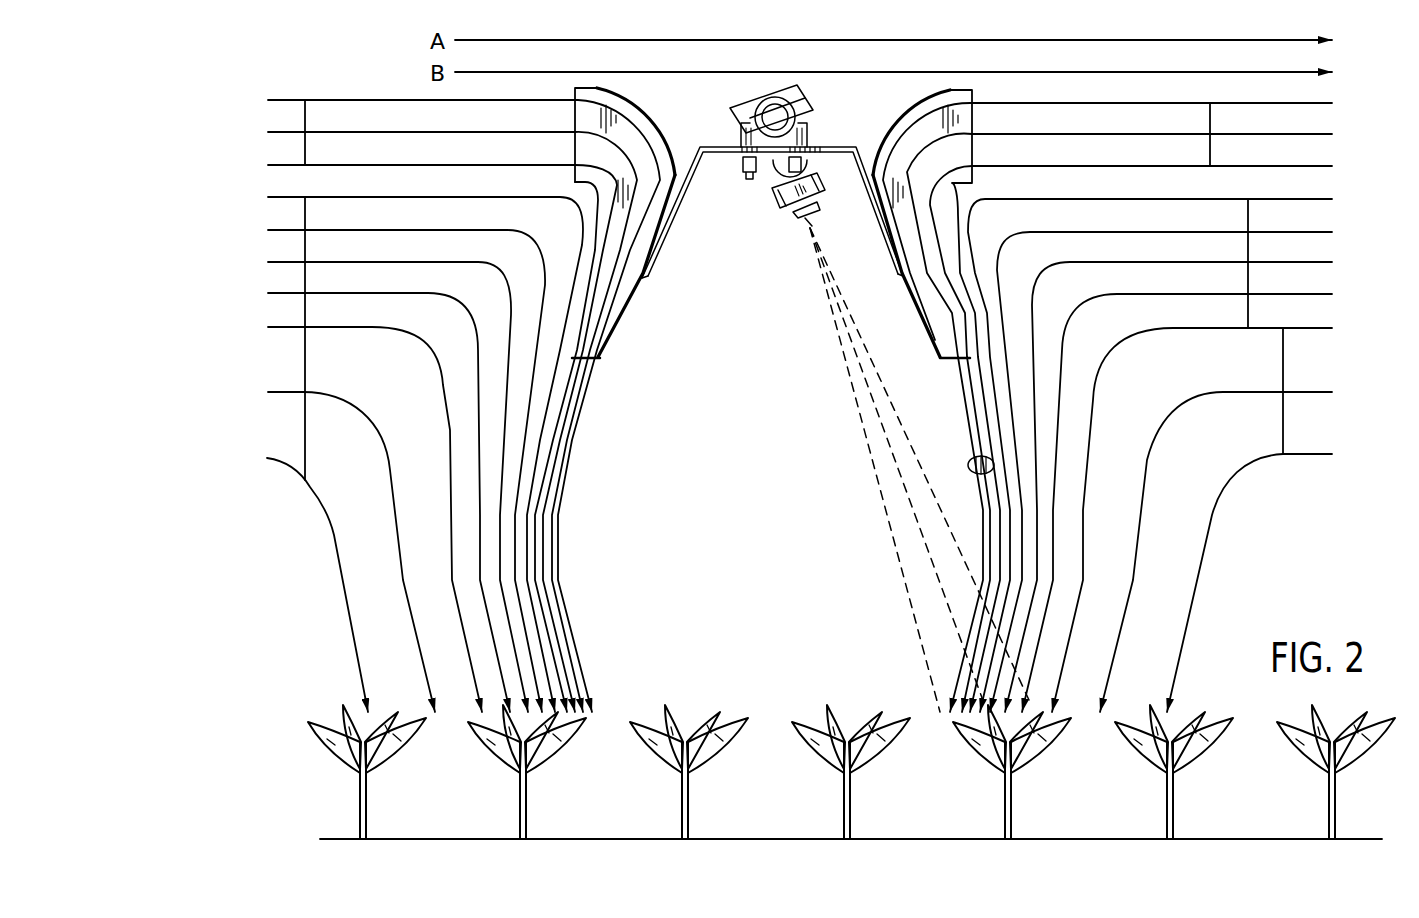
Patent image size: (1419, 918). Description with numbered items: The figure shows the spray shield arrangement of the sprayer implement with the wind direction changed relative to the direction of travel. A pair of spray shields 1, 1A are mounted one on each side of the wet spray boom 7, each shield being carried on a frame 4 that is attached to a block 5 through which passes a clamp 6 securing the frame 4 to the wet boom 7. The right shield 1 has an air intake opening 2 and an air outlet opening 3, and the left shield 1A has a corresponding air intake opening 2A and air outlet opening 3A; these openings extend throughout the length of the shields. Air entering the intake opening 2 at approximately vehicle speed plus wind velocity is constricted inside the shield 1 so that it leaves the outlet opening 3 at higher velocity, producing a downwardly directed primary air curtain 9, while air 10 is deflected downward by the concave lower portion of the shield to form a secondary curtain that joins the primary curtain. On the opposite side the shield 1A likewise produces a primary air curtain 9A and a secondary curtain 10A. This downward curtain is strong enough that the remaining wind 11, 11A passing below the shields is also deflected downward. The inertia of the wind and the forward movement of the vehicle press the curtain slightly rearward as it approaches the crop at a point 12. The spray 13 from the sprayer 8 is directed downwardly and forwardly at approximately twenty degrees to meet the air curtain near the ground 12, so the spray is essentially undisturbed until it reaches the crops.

The spray shield 1 is at (933, 128).
The left curved shield plate 1A is at (650, 123).
The air intake opening 2 is at (974, 124).
The left shield housing 2A is at (575, 123).
The air outlet opening 3 is at (957, 360).
The left deflector plate 3A is at (604, 360).
The frame 4 is at (862, 166).
The block 5 is at (808, 134).
The clamp 6 is at (760, 101).
The wet spray boom 7 is at (745, 126).
The sprayer 8 is at (805, 222).
The primary air curtain 9 is at (1212, 148).
The left air stream lines 9A is at (305, 118).
The secondary curtain of air 10 is at (1250, 276).
The left air stream lines 10A is at (305, 248).
The remaining wind below the shield 11 is at (1285, 382).
The left outer air stream lines 11A is at (305, 366).
The point near the ground 12 is at (1013, 630).
The spray pattern 13 is at (880, 493).